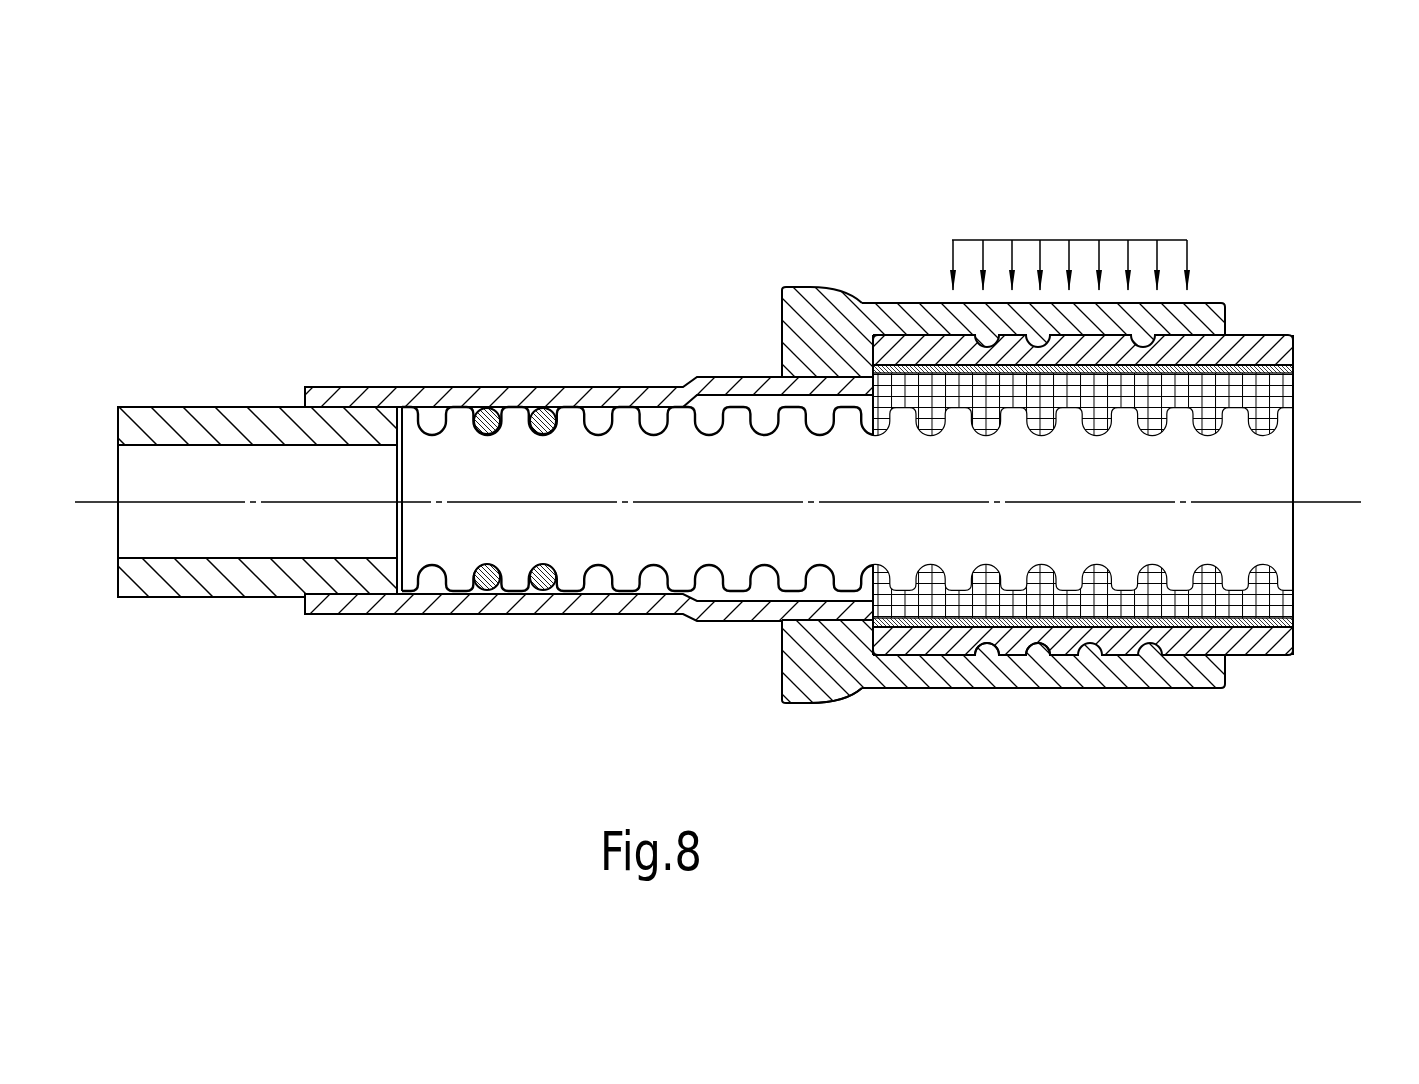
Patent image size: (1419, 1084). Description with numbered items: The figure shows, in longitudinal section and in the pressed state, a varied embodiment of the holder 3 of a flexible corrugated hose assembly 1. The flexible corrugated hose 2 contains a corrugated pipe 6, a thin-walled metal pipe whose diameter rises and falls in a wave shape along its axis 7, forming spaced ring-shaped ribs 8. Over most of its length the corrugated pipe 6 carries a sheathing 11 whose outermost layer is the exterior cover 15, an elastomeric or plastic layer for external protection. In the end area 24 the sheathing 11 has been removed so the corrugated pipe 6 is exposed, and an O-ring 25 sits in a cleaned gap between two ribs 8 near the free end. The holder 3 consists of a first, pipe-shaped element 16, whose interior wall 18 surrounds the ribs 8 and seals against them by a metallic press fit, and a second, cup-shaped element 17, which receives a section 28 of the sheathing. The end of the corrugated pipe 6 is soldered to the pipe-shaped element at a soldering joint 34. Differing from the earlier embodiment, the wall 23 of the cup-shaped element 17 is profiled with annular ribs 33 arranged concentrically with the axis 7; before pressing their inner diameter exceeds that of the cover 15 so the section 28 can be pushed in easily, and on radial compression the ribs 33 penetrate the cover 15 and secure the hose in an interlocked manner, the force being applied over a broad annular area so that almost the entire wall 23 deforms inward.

The flexible corrugated hose assembly 1 is at (910, 200).
The flexible corrugated hose 2 is at (1313, 377).
The holder 3 is at (807, 250).
The corrugated pipe 6 is at (616, 553).
The axis 7 is at (1332, 500).
The ring-shaped ribs 8 is at (570, 413).
The sheathing 11 is at (1300, 582).
The exterior cover 15 is at (1268, 333).
The first, pipe-shaped element 16 is at (586, 330).
The second, cup-shaped element 17 is at (866, 708).
The interior wall 18 is at (656, 580).
The wall 23 is at (1182, 672).
The end area 24 is at (478, 590).
The O-ring 25 is at (540, 592).
The section of the sheathing 28 is at (1227, 762).
The ribs 33 is at (1038, 650).
The soldering joint 34 is at (402, 593).